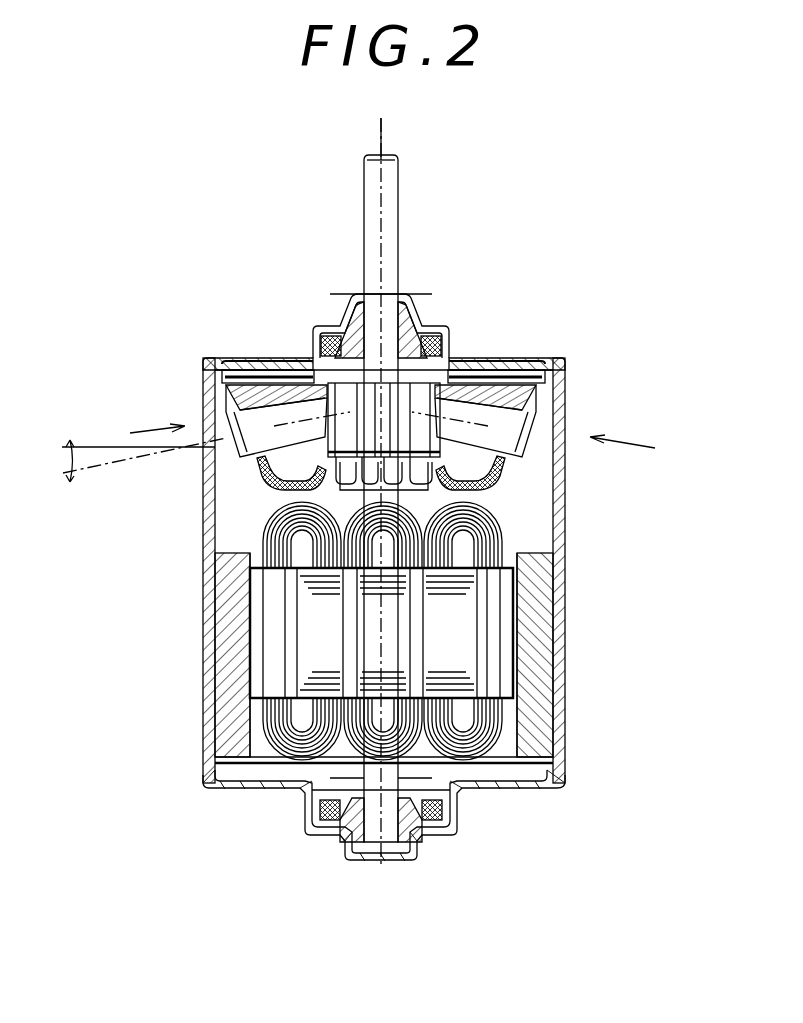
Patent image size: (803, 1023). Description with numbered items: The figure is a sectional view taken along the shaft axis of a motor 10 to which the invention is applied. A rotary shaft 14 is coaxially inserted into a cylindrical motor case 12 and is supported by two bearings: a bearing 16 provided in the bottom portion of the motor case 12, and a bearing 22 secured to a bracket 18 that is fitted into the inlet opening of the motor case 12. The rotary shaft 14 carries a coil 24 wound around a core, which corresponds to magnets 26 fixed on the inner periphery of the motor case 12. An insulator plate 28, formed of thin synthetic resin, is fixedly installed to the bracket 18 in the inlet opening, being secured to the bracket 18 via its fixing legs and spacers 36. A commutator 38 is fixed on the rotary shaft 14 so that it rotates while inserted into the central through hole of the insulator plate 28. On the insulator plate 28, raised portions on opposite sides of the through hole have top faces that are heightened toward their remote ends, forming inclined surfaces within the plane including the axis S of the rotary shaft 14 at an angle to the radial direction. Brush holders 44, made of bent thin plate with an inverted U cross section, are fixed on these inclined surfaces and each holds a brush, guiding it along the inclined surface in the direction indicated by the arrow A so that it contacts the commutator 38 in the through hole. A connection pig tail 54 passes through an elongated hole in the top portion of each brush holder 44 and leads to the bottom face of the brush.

The motor 10 is at (565, 258).
The motor case 12 is at (565, 601).
The rotary shaft 14 is at (399, 228).
The bearing 16 is at (432, 846).
The bracket 18 is at (505, 357).
The bearing 22 is at (417, 318).
The coil 24 is at (503, 510).
The magnets 26 is at (552, 575).
The insulator plate 28 is at (556, 392).
The spacers 36 is at (238, 357).
The commutator 38 is at (300, 383).
The brush holder 44 is at (248, 446).
The connection pig tail 54 is at (264, 480).
The axis of the rotary shaft S is at (386, 137).
The arrow indicating brush guiding direction A is at (160, 425).